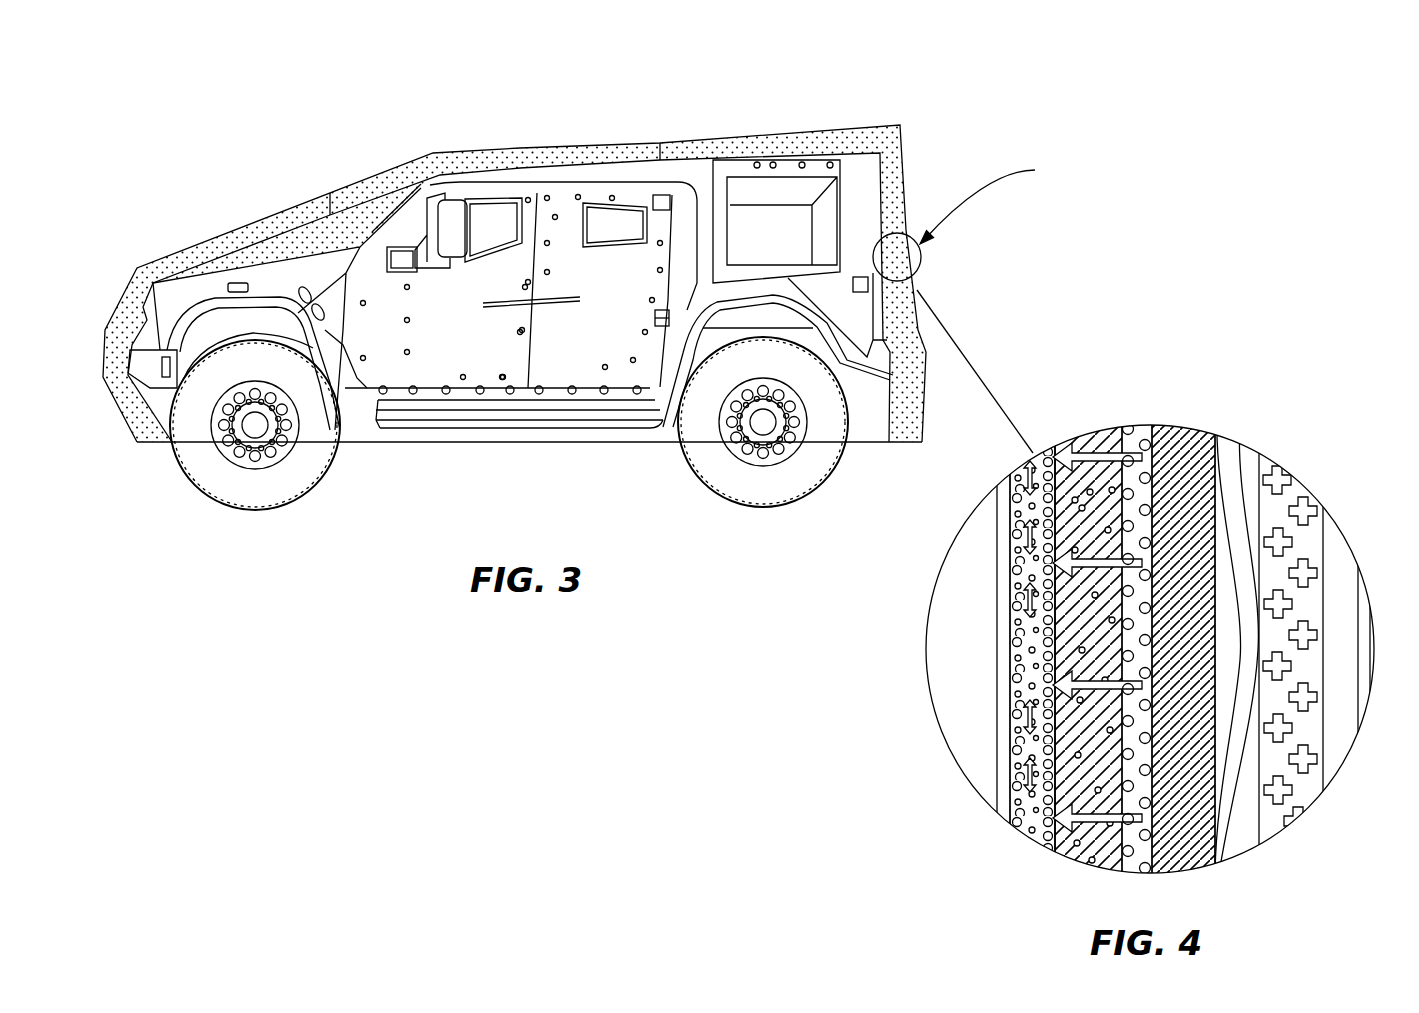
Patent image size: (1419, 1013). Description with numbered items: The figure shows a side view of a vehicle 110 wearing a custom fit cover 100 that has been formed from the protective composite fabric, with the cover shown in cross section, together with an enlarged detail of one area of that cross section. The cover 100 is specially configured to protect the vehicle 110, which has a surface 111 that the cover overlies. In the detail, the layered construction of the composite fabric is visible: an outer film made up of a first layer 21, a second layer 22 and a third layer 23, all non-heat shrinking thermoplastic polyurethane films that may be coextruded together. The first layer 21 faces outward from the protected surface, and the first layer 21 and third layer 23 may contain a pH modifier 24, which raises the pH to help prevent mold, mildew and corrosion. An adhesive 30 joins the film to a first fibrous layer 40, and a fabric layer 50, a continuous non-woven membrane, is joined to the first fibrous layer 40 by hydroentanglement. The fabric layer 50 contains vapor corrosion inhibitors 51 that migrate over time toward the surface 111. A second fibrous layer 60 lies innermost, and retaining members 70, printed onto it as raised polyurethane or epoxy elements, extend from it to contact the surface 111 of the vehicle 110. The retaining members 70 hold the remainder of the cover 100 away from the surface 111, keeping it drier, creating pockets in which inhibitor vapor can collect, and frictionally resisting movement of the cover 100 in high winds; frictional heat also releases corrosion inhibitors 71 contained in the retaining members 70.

In FIG. 3, the custom fit cover 100 is at (725, 118).
In FIG. 3, the vehicle 110 is at (577, 356).
In FIG. 3, the surface 111 is at (457, 343).
In FIG. 3, the vapor corrosion inhibitors 51 is at (514, 243).
In FIG. 4, the vapor corrosion inhibitors 51 is at (1017, 763).
In FIG. 3, the corrosion inhibitors 71 is at (378, 210).
In FIG. 4, the retaining members 70 is at (1013, 507).
In FIG. 4, the second fibrous layer 60 is at (1090, 432).
In FIG. 4, the fabric layer 50 is at (1140, 437).
In FIG. 4, the first fibrous layer 40 is at (1186, 465).
In FIG. 4, the adhesive 30 is at (1245, 812).
In FIG. 4, the third layer 23 is at (1335, 631).
In FIG. 4, the pH modifier 24 is at (1273, 456).
In FIG. 4, the second layer 22 is at (1342, 570).
In FIG. 4, the first layer 21 is at (1365, 668).